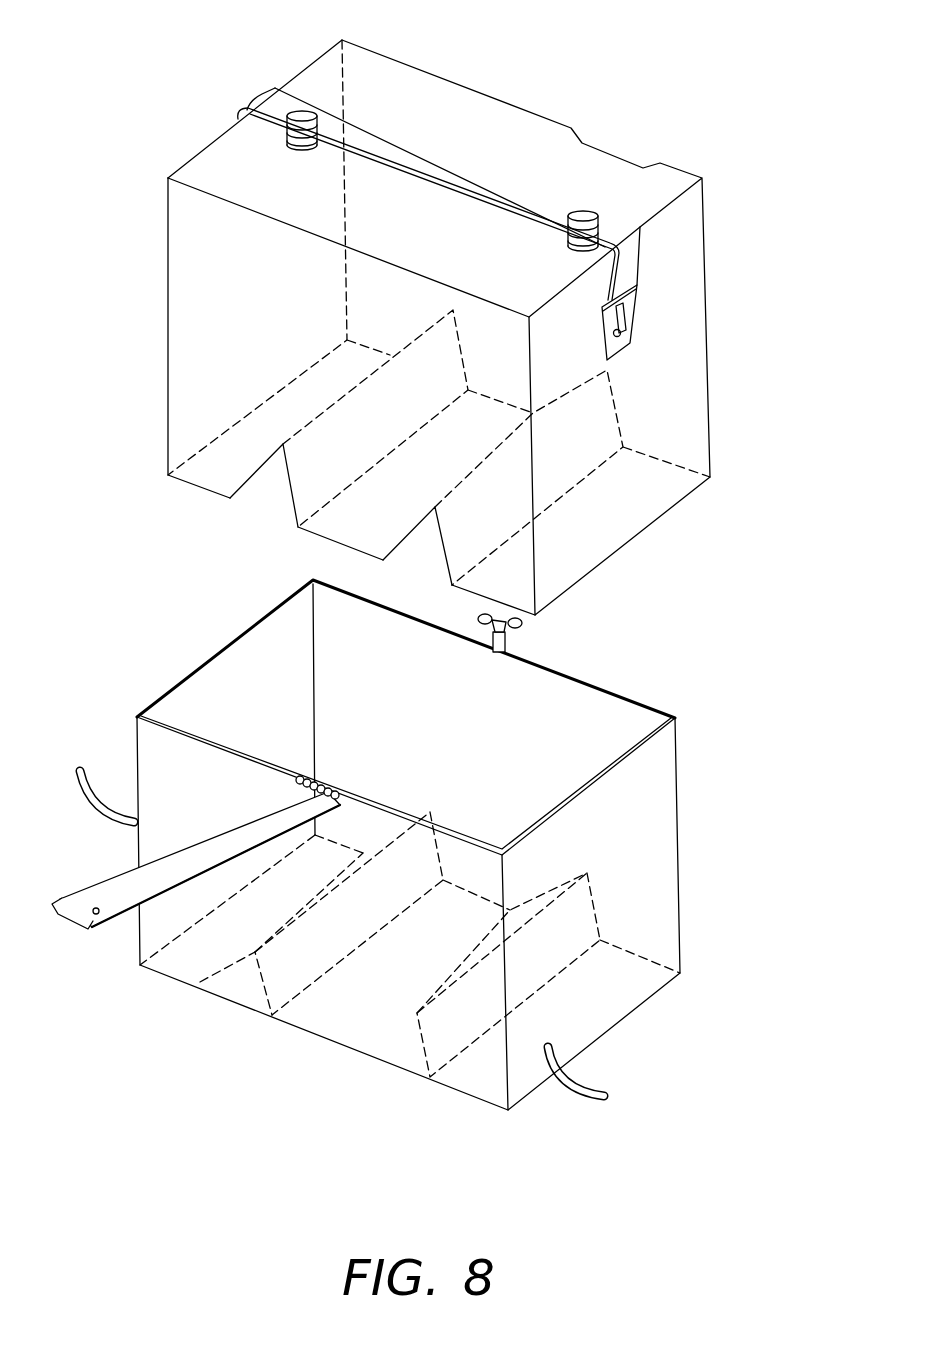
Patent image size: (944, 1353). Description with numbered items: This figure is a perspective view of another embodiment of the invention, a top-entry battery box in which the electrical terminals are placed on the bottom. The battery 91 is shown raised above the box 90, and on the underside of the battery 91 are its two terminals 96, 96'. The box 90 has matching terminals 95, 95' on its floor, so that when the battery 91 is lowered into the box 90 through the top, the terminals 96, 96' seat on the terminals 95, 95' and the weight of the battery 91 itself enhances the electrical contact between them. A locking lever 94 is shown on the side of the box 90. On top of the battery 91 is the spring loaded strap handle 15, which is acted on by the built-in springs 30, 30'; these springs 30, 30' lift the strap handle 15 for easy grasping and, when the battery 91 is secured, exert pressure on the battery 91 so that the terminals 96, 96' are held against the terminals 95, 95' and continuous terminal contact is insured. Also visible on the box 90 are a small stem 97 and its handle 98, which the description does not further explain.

The strap handle 15 is at (428, 157).
The spring 30 is at (300, 79).
The spring 30' is at (617, 237).
The box 90 is at (643, 866).
The battery 91 is at (680, 373).
The locking lever 94 is at (130, 883).
The terminal 95 is at (321, 955).
The terminal 95' is at (564, 975).
The terminal 96 is at (339, 443).
The terminal 96' is at (555, 477).
The valve 97 is at (507, 643).
The valve handle 98 is at (478, 617).